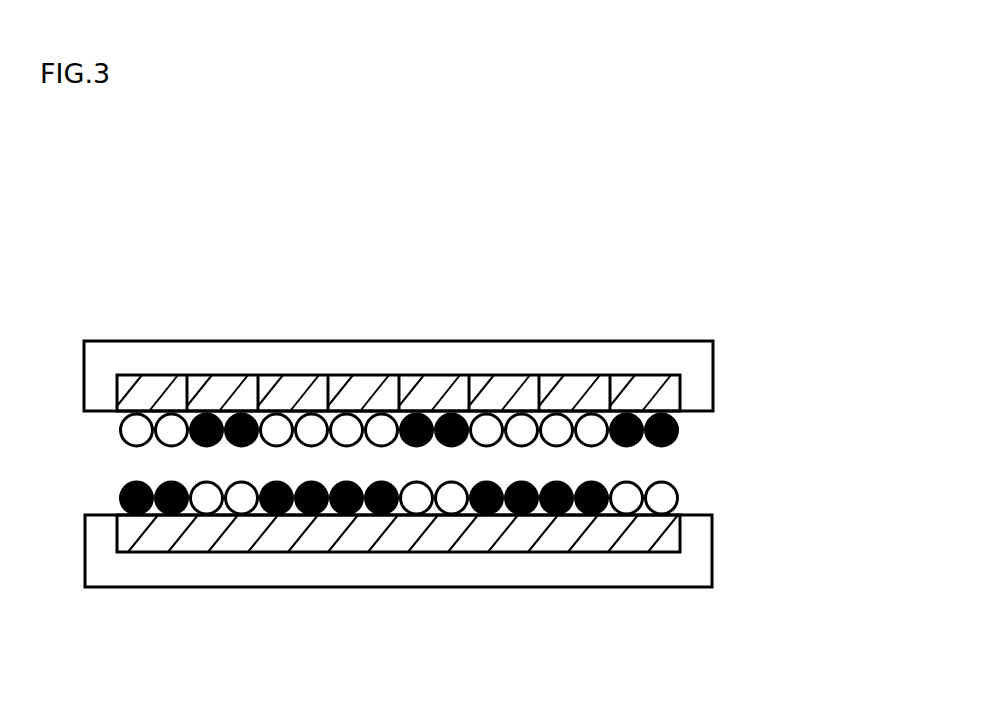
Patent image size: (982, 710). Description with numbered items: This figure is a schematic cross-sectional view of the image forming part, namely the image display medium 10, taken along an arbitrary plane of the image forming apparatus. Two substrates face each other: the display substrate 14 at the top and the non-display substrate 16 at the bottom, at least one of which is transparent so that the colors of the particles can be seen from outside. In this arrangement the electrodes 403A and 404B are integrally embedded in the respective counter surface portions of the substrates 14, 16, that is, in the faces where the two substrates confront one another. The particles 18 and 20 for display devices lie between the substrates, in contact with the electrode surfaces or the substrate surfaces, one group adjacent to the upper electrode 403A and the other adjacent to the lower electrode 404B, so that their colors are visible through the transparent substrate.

The image display medium 10 is at (284, 256).
The display substrate 14 is at (559, 357).
The non-display substrate 16 is at (561, 572).
The electrode 403A is at (680, 379).
The electrode 404B is at (680, 528).
The particles for display devices 18 is at (674, 438).
The particles for display devices 20 is at (677, 494).